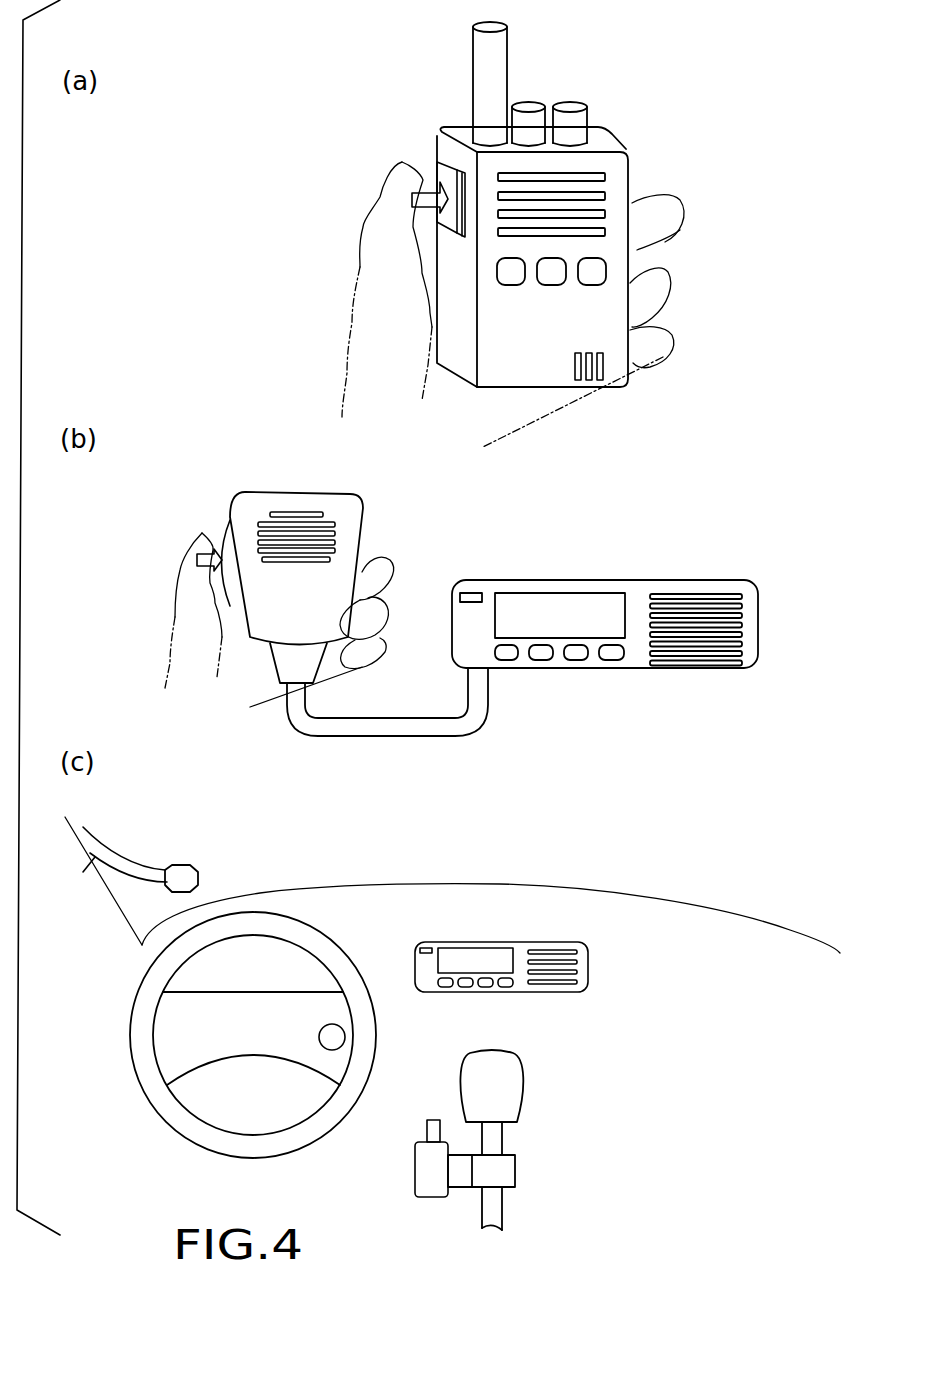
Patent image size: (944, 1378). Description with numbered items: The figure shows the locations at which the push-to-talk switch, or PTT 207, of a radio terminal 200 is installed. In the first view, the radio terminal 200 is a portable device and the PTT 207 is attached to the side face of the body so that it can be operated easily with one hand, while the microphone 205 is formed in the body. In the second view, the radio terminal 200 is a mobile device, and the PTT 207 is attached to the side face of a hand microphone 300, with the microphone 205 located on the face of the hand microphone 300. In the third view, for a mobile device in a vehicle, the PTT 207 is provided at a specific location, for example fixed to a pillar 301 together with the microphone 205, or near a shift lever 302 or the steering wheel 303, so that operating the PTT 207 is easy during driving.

The radio terminal 200 is at (610, 147).
The microphone 205 is at (588, 380).
The push-to-talk (PTT) switch 207 is at (437, 172).
The hand microphone 300 is at (263, 492).
The pillar 301 is at (100, 852).
The shift lever 302 is at (510, 1052).
The steering wheel 303 is at (168, 1120).